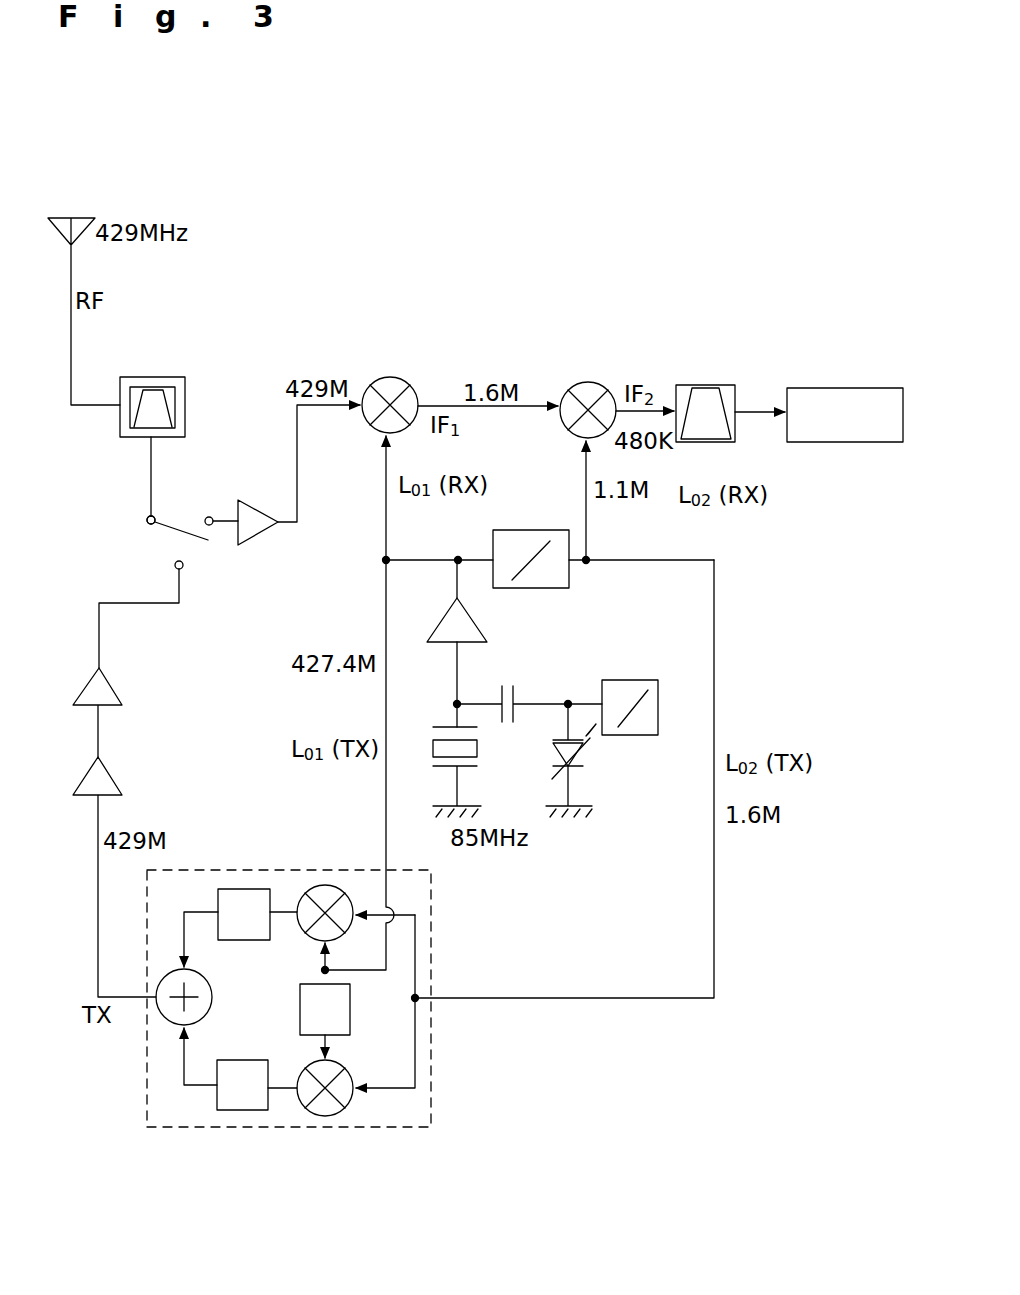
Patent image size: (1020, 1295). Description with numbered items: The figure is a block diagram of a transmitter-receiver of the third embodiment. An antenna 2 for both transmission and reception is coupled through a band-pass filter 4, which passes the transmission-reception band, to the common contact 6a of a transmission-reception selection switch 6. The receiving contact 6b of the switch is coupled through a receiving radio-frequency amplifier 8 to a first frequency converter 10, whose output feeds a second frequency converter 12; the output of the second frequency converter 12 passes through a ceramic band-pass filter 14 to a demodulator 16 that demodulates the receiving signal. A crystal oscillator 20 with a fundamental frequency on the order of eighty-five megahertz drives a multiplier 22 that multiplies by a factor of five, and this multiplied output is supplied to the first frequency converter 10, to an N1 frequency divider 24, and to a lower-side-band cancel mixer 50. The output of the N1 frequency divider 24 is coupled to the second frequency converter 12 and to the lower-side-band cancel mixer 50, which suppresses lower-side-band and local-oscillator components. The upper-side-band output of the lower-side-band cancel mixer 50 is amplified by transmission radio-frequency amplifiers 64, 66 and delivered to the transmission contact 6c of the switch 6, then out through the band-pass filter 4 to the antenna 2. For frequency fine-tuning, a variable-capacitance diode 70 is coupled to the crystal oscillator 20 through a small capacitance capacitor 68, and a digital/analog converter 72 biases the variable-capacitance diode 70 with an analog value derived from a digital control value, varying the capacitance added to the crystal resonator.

The antenna 2 is at (66, 218).
The band-pass filter 4 is at (185, 407).
The transmission-reception selection switch 6 is at (147, 520).
The common contact 6a is at (149, 527).
The receiving contact 6b is at (210, 516).
The transmission contact 6c is at (183, 566).
The receiving radio-frequency amplifier 8 is at (258, 525).
The first frequency converter 10 is at (388, 377).
The second frequency converter 12 is at (586, 382).
The band-pass filter 14 is at (704, 385).
The demodulator 16 is at (845, 388).
The crystal oscillator 20 is at (446, 729).
The multiplier 22 is at (442, 625).
The N1 frequency divider 24 is at (536, 530).
The lower-side-band cancel mixer 50 is at (432, 1058).
The transmission radio-frequency amplifier 64 is at (105, 779).
The transmission radio-frequency amplifier 66 is at (105, 688).
The small capacitance capacitor 68 is at (510, 687).
The variable-capacitance diode 70 is at (584, 759).
The digital/analog converter 72 is at (640, 680).